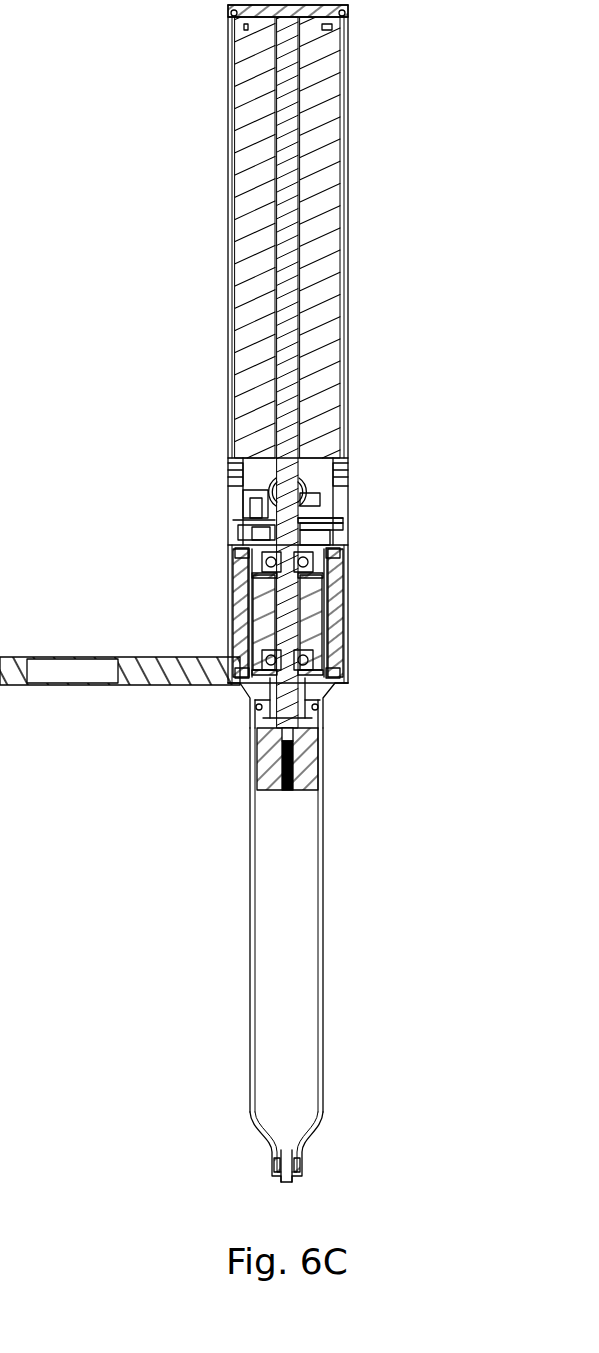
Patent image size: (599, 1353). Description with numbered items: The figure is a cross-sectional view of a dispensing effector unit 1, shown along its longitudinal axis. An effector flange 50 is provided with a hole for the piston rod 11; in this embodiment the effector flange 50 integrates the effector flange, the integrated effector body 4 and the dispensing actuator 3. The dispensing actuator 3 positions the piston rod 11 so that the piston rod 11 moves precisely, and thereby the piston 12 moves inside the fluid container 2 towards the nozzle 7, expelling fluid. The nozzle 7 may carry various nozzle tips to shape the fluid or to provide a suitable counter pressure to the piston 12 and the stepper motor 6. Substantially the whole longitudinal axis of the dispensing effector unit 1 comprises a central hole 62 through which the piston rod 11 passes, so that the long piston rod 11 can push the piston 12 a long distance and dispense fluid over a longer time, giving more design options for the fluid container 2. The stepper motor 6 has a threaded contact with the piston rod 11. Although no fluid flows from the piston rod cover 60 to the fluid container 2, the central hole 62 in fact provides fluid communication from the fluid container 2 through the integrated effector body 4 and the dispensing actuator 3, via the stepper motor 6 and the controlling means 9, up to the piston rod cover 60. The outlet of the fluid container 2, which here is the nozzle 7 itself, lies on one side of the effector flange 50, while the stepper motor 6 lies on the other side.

The dispensing effector unit 1 is at (389, 128).
The fluid container 2 is at (305, 960).
The dispensing actuator 3 is at (353, 648).
The integrated effector body 4 is at (262, 676).
The stepper motor 6 is at (325, 628).
The nozzle 7 is at (282, 1162).
The controlling means 9 is at (332, 500).
The piston rod 11 is at (287, 203).
The piston 12 is at (300, 748).
The effector flange 50 is at (143, 665).
The piston rod cover 60 is at (232, 201).
The central hole 62 is at (295, 510).